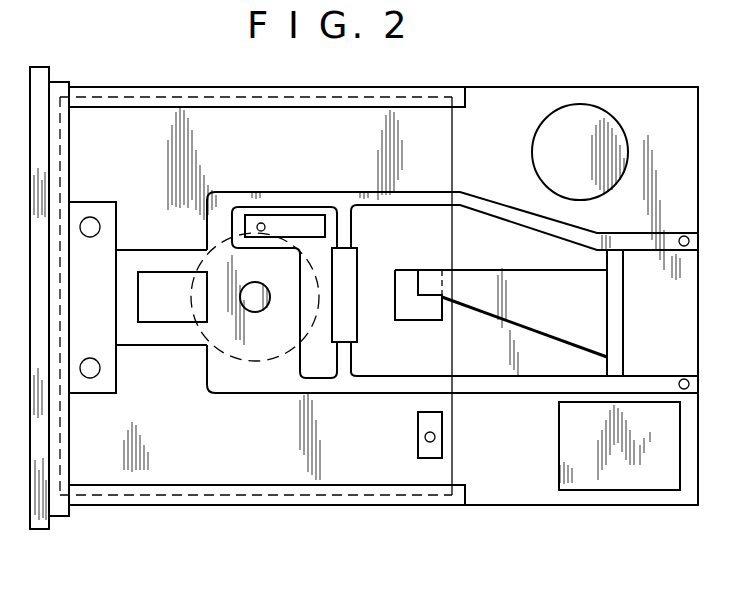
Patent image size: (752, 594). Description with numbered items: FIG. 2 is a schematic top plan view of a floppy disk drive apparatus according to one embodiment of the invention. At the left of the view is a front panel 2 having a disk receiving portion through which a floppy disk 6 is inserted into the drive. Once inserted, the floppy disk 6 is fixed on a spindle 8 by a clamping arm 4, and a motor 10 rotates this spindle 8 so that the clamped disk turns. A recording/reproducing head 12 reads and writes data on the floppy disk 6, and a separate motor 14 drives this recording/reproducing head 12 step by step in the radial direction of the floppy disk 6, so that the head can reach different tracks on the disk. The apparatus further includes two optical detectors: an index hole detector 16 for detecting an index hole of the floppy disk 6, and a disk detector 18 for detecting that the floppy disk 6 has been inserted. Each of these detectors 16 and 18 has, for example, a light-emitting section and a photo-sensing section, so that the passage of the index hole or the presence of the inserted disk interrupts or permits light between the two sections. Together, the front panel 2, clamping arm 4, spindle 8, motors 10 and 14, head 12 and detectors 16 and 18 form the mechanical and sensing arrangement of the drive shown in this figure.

The front panel 2 is at (40, 530).
The clamping arm 4 is at (281, 392).
The floppy disk 6 is at (290, 477).
The spindle 8 is at (195, 297).
The motor 10 is at (612, 136).
The recording/reproducing head 12 is at (418, 312).
The motor 14 is at (622, 480).
The index hole detector 16 is at (305, 220).
The disk detector 18 is at (422, 447).